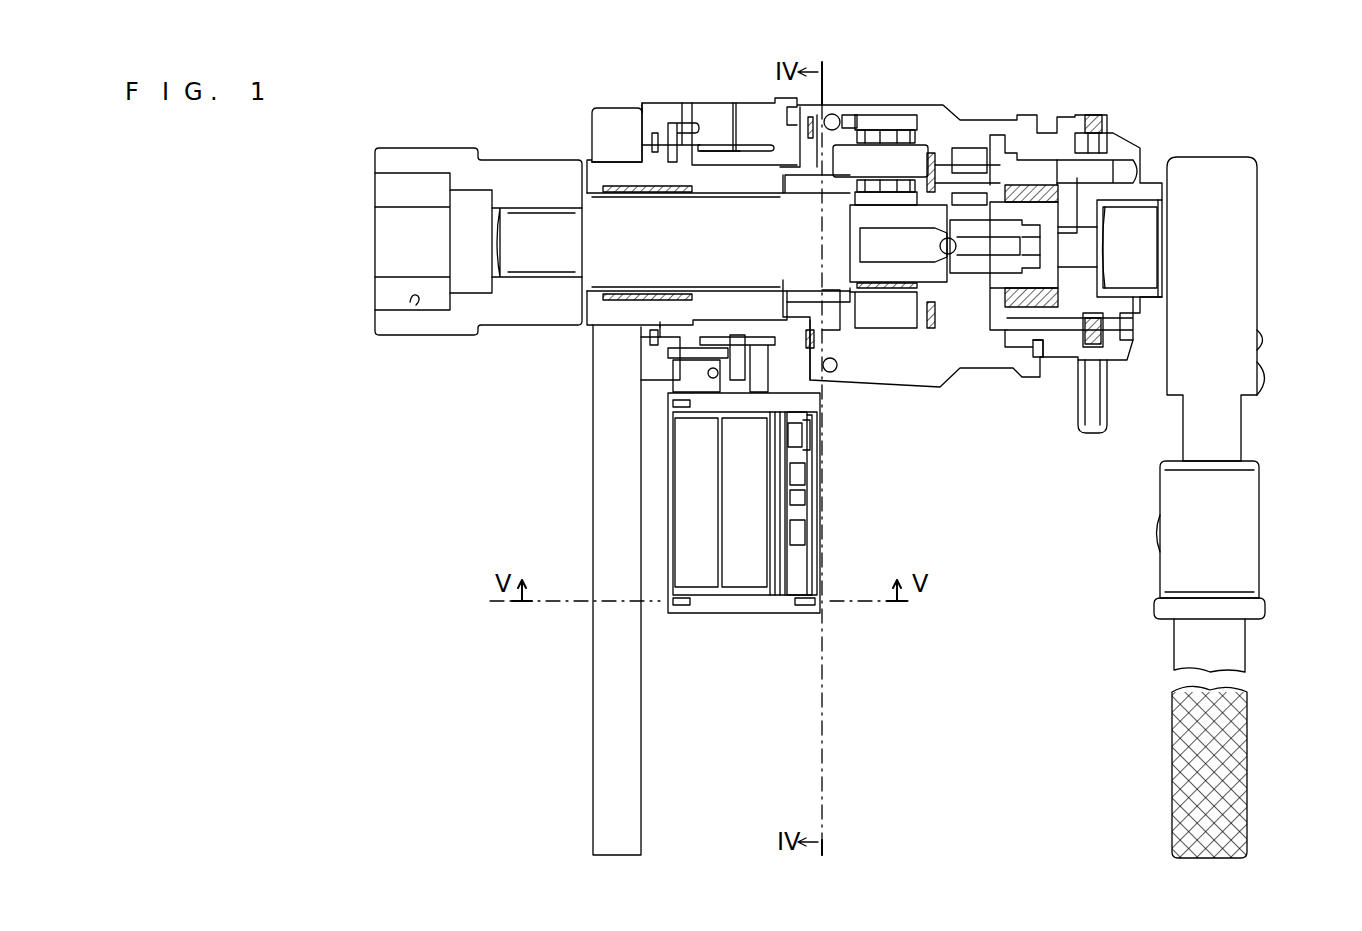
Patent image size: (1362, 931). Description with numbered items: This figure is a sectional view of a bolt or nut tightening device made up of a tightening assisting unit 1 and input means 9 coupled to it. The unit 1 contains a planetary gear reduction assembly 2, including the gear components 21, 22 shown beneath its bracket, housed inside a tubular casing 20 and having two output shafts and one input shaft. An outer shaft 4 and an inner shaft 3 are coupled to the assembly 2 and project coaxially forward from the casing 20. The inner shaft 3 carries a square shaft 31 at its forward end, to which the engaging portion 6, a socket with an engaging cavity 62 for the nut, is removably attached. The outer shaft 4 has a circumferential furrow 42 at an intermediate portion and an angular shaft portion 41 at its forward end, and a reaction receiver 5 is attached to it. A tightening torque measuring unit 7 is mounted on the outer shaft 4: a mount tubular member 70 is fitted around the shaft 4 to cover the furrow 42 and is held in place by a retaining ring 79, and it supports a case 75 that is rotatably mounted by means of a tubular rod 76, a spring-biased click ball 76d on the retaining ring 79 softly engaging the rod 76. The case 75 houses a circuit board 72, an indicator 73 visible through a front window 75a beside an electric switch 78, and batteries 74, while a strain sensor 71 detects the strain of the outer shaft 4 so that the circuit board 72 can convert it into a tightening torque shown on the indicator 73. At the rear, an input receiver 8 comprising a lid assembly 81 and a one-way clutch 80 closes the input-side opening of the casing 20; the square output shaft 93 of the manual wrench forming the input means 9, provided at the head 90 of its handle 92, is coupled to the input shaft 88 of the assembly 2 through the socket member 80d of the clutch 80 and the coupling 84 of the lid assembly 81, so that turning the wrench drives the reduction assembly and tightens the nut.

The tightening assisting unit 1 is at (958, 472).
The planetary gear reduction assembly 2 is at (912, 114).
The inner shaft 3 is at (630, 240).
The outer shaft 4 is at (660, 322).
The reaction receiver 5 is at (607, 706).
The engaging portion 6 is at (492, 130).
The tightening torque measuring unit 7 is at (734, 560).
The input receiver 8 is at (1085, 449).
The input means 9 is at (1215, 464).
The tubular casing 20 is at (856, 105).
The gear 21 is at (976, 130).
The bearing 22 is at (890, 130).
The square shaft 31 is at (537, 252).
The angular shaft portion 41 is at (610, 150).
The furrow 42 is at (850, 322).
The engaging cavity 62 is at (414, 305).
The mount tubular member 70 is at (665, 388).
The strain sensor 71 is at (733, 148).
The circuit board 72 is at (757, 580).
The indicator 73 is at (808, 500).
The batteries 74 is at (695, 548).
The case 75 is at (773, 612).
The front window 75a is at (812, 530).
The tubular rod 76 is at (770, 355).
The click ball 76d is at (680, 440).
The electric switch 78 is at (812, 432).
The retaining ring 79 is at (662, 112).
The one-way clutch 80 is at (1118, 403).
The socket member 80d is at (1110, 195).
The lid assembly 81 is at (1045, 360).
The coupling 84 is at (1080, 200).
The input shaft 88 is at (975, 262).
The head 90 is at (1225, 360).
The handle 92 is at (1190, 645).
The output shaft 93 is at (1125, 270).